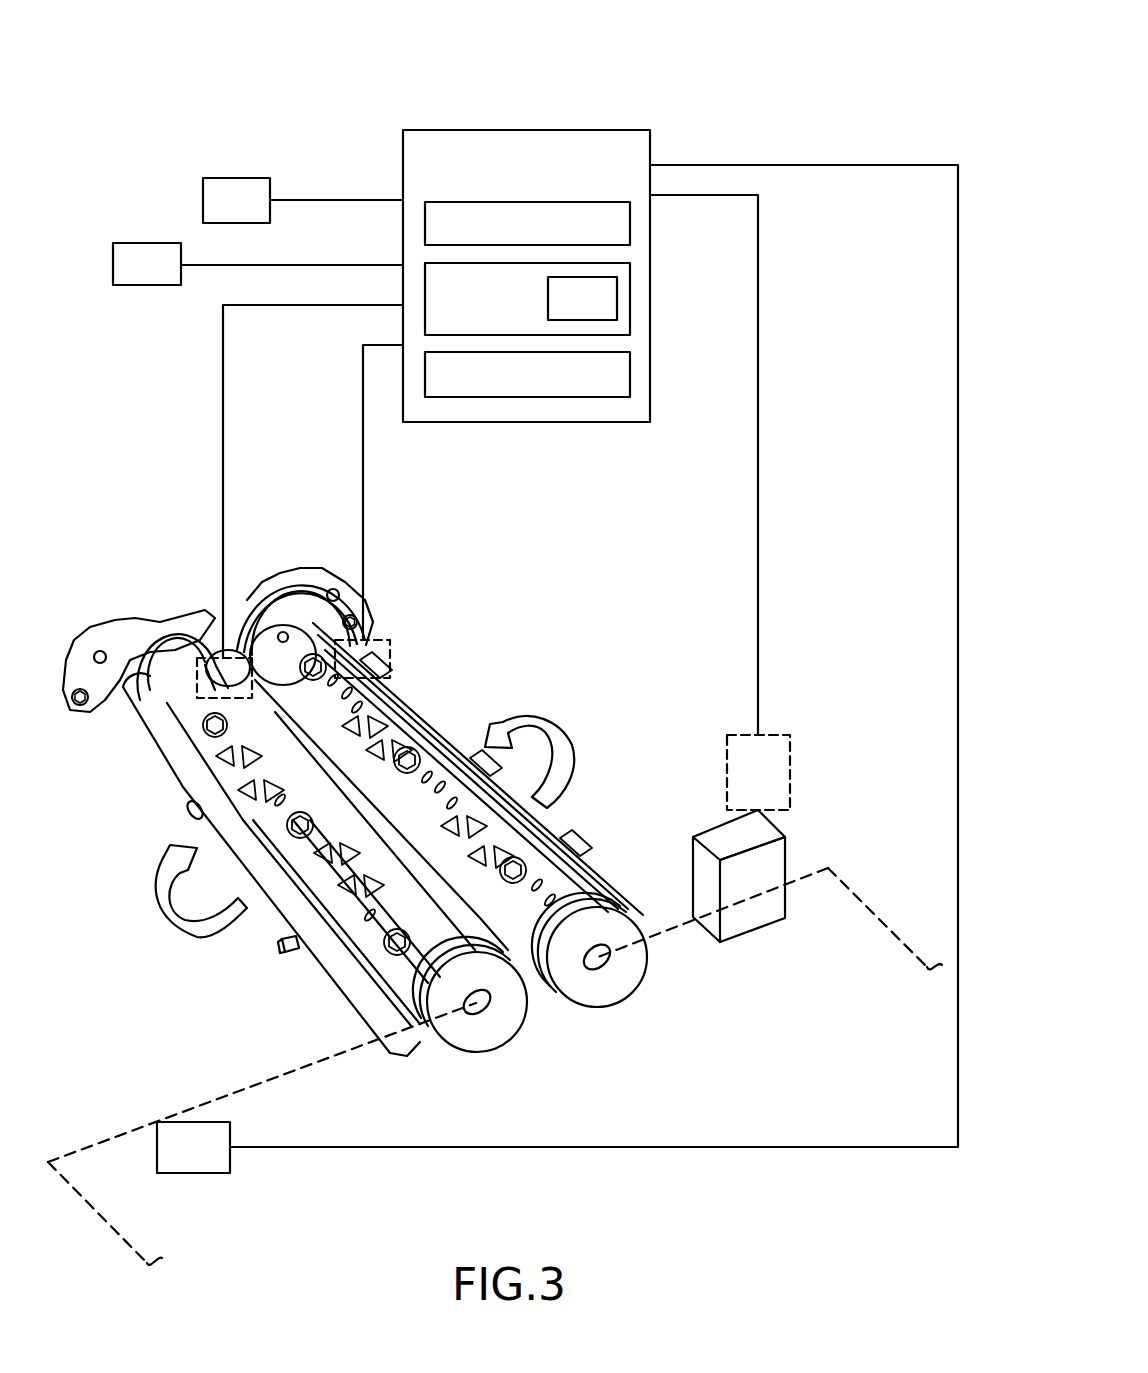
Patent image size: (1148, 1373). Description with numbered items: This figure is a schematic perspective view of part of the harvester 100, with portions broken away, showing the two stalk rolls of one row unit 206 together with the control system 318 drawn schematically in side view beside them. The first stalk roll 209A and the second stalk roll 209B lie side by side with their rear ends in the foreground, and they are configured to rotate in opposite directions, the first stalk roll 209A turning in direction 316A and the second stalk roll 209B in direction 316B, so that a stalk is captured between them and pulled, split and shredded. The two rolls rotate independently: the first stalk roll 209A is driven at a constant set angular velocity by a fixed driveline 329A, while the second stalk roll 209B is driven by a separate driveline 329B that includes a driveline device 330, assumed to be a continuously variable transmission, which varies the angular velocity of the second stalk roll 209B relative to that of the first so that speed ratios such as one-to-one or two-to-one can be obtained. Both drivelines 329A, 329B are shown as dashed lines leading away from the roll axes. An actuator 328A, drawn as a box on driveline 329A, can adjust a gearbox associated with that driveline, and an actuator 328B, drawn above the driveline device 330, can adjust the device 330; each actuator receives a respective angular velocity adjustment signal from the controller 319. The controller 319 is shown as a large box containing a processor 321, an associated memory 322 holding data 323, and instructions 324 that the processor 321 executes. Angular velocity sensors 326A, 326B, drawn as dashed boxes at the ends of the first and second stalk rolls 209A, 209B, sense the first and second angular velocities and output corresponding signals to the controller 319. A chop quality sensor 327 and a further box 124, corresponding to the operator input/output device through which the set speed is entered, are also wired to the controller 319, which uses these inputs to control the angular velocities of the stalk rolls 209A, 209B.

The harvester 100 is at (880, 98).
The control system 318 is at (745, 98).
The controller 319 is at (548, 171).
The processor 321 is at (478, 237).
The memory 322 is at (478, 314).
The data 323 is at (604, 314).
The instructions 324 is at (478, 389).
The user interface 124 is at (258, 214).
The chop quality sensor 327 is at (169, 279).
The row unit 206 is at (118, 553).
The first stalk roll 209A is at (252, 748).
The second stalk roll 209B is at (433, 777).
The direction of rotation of first stalk roll 316A is at (155, 880).
The direction of rotation of second stalk roll 316B is at (568, 757).
The angular velocity sensor 326A is at (143, 695).
The angular velocity sensor 326B is at (392, 654).
The actuator 328A is at (193, 1173).
The actuator 328B is at (792, 752).
The driveline 329A is at (243, 1088).
The driveline 329B is at (805, 878).
The driveline device 330 is at (752, 932).